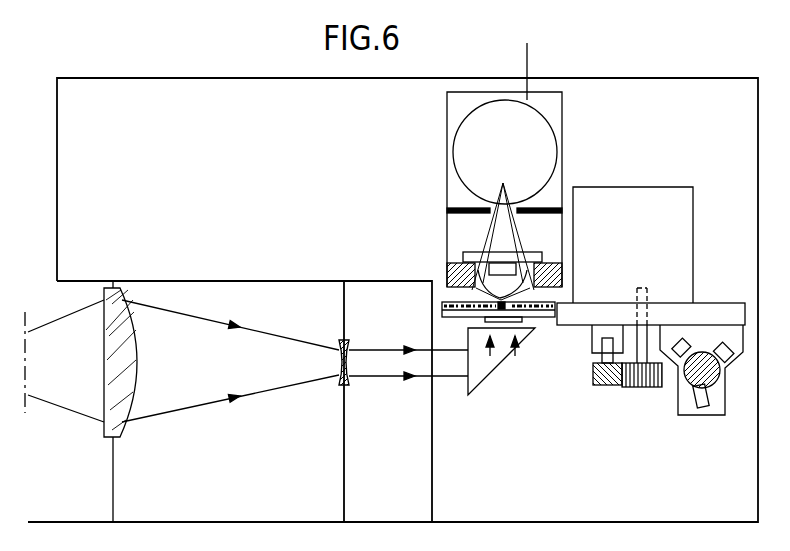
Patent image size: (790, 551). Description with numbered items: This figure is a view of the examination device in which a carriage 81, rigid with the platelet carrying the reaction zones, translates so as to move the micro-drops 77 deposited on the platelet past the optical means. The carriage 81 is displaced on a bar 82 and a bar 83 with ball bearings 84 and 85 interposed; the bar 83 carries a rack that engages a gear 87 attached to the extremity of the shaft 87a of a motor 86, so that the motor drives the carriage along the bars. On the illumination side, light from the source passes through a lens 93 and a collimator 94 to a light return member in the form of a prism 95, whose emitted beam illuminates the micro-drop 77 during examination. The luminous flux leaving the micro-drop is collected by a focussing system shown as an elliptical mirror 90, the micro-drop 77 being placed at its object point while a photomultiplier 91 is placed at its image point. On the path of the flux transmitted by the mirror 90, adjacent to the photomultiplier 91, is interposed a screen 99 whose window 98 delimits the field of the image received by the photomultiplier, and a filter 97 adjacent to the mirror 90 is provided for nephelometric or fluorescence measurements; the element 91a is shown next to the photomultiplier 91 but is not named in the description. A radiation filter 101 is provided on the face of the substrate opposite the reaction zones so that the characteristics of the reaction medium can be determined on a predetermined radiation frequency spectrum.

The photomultiplier 91 is at (509, 112).
The lamp lead 91a is at (530, 84).
The screen 99 is at (548, 203).
The window 98 is at (470, 200).
The motor 86 is at (648, 205).
The filter 97 is at (545, 252).
The elliptical mirror 90 is at (448, 275).
The micro-drop 77 is at (505, 303).
The shaft 87a is at (643, 286).
The carriage 81 is at (705, 306).
The radiation filter 101 is at (525, 322).
The prism 95 is at (496, 362).
The collimator 94 is at (350, 382).
The lens 93 is at (120, 408).
The ball bearing 84 is at (595, 353).
The bar 83 is at (604, 382).
The gear 87 is at (650, 387).
The ball bearing 85 is at (735, 347).
The bar 82 is at (706, 400).